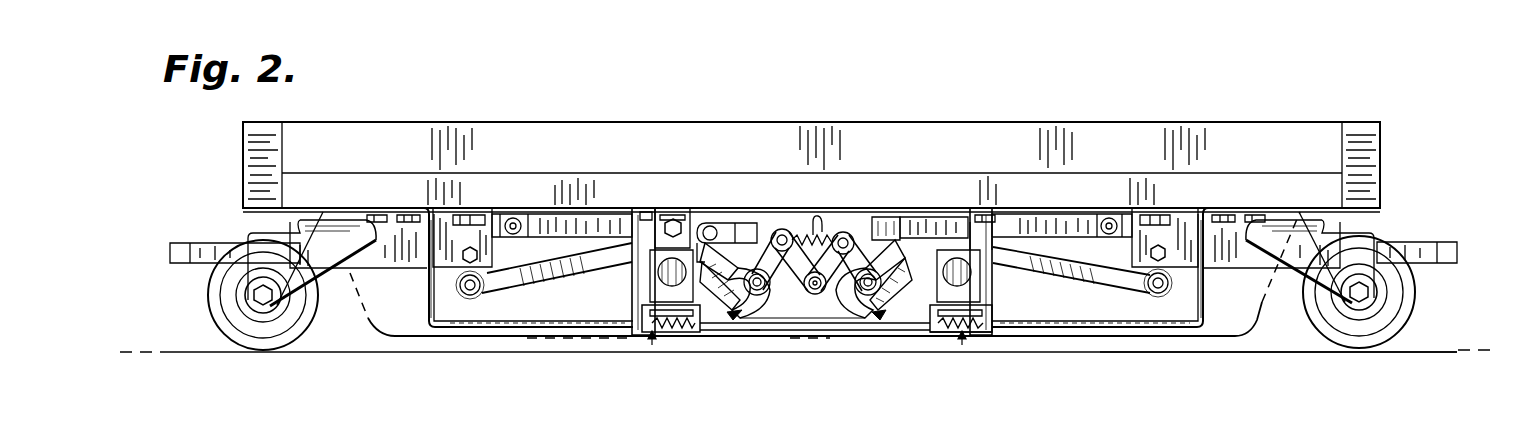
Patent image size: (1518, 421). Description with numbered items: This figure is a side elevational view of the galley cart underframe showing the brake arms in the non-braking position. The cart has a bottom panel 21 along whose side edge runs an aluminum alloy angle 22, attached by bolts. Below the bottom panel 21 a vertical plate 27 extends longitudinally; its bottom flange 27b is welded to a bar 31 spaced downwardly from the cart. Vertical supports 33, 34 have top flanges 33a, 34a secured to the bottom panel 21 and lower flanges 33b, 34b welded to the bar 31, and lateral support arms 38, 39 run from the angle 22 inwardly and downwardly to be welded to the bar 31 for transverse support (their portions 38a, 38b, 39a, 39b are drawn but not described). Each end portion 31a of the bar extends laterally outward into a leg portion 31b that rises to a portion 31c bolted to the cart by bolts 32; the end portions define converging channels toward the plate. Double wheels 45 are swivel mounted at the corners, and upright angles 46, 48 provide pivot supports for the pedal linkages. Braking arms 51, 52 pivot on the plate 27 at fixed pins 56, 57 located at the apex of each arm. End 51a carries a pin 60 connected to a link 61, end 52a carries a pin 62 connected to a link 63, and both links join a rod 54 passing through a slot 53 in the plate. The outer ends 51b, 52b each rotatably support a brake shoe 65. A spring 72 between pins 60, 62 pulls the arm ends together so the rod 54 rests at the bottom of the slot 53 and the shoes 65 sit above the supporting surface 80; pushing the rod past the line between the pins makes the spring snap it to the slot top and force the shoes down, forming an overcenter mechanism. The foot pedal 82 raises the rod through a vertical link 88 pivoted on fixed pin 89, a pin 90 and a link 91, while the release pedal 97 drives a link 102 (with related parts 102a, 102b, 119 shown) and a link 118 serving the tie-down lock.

The bottom panel 21 is at (537, 210).
The aluminum alloy angle 22 is at (416, 340).
The vertical plate 27 is at (825, 323).
The bottom flange 27b is at (765, 335).
The bar 31 is at (710, 335).
The end portion 31a is at (505, 330).
The leg portion 31b is at (429, 298).
The portion 31c is at (406, 213).
The bolt 32 is at (423, 215).
The vertical support 33 is at (981, 271).
The top flange 33a is at (984, 210).
The lower flange 33b is at (940, 335).
The vertical support 34 is at (664, 214).
The top flange 34a is at (676, 238).
The lower flange 34b is at (690, 334).
The lateral support arm 38 is at (640, 300).
The plate top flange 38a is at (642, 210).
The spring housing 38b is at (641, 332).
The lateral support arm 39 is at (982, 280).
The block top flange 39a is at (985, 212).
The spring housing 39b is at (975, 334).
The double wheels 45 is at (209, 293).
The upright extruded aluminum alloy angle 46 is at (1185, 220).
The upright extruded aluminum alloy angle 48 is at (403, 262).
The braking arm 51 is at (880, 332).
The end of arm 51 51a is at (893, 222).
The end of arm 51 51b is at (900, 335).
The braking arm 52 is at (740, 320).
The end of arm 52 52a is at (740, 224).
The end of arm 52 52b is at (716, 335).
The slot 53 is at (823, 232).
The rod 54 is at (814, 294).
The fixed pivot pin 56 is at (865, 311).
The fixed pivot pin 57 is at (746, 317).
The pin 60 is at (847, 230).
The link 61 is at (857, 286).
The pin 62 is at (775, 229).
The link 63 is at (769, 286).
The brake shoe 65 is at (652, 346).
The spring 72 is at (810, 222).
The supporting surface 80 is at (1232, 346).
The foot pedal 82 is at (204, 258).
The vertical link 88 is at (468, 295).
The fixed pivot pin 89 is at (478, 255).
The pivot pin 90 is at (481, 291).
The link 91 is at (578, 286).
The pedal 97 is at (1425, 246).
The link 102 is at (617, 214).
The connecting bar 102a is at (1068, 214).
The connecting bar 102b is at (920, 217).
The link 118 is at (658, 262).
The bracket 119 is at (699, 236).